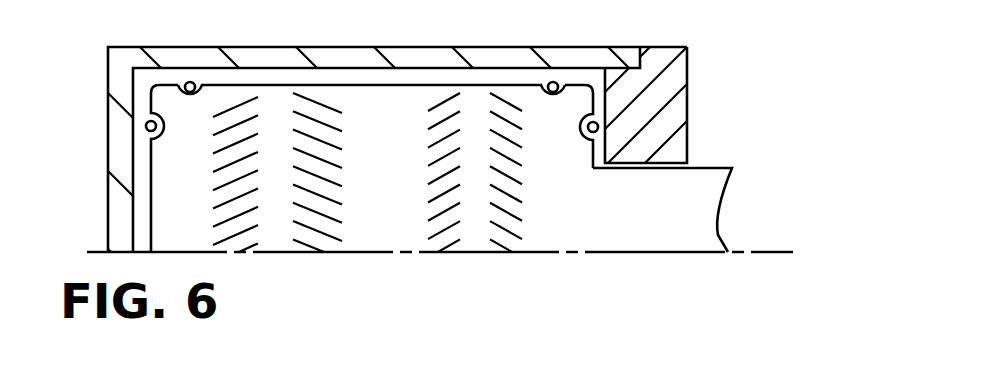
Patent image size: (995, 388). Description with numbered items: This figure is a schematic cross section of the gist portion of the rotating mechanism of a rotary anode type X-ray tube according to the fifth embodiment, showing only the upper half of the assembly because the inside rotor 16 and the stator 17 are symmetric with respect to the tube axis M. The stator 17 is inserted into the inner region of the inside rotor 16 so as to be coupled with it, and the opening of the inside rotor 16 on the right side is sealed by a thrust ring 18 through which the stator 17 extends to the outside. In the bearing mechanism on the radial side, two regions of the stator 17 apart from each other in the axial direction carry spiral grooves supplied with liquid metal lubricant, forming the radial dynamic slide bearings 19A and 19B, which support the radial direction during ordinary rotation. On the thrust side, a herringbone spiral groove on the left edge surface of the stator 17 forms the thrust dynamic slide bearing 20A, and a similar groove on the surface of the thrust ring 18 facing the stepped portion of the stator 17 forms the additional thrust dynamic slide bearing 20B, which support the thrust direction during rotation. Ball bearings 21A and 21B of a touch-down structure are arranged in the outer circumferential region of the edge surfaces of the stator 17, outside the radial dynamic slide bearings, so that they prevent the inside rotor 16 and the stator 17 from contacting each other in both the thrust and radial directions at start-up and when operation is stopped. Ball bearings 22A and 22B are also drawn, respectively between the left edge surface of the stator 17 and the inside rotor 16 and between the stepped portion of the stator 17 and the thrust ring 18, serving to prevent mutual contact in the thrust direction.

The inside rotor 16 is at (410, 58).
The stator 17 is at (710, 188).
The thrust ring 18 is at (688, 60).
The radial dynamic slide bearing 19A is at (316, 229).
The radial dynamic slide bearing 19B is at (510, 232).
The thrust dynamic slide bearing 20A is at (158, 140).
The thrust dynamic slide bearing 20B is at (583, 128).
The ball bearing 21A is at (145, 127).
The ball bearing 21B is at (599, 125).
The ball bearing 22A is at (190, 80).
The ball bearing 22B is at (553, 81).
The tube axis M is at (768, 248).